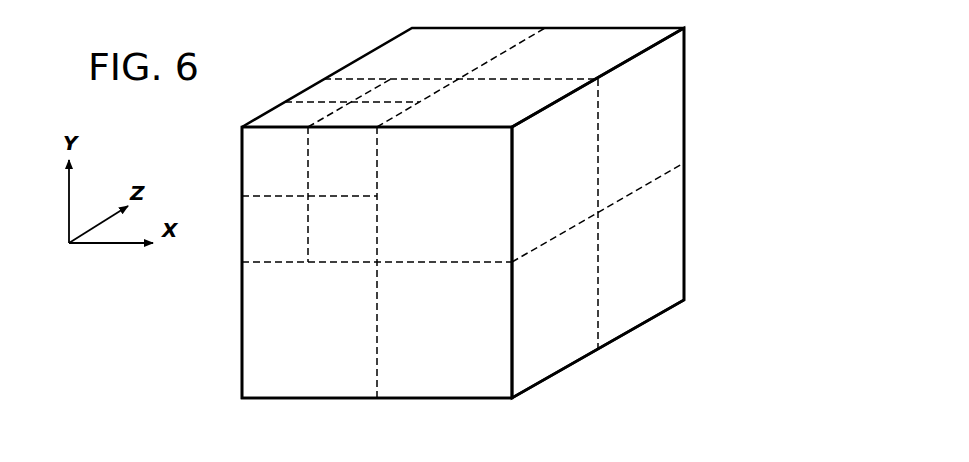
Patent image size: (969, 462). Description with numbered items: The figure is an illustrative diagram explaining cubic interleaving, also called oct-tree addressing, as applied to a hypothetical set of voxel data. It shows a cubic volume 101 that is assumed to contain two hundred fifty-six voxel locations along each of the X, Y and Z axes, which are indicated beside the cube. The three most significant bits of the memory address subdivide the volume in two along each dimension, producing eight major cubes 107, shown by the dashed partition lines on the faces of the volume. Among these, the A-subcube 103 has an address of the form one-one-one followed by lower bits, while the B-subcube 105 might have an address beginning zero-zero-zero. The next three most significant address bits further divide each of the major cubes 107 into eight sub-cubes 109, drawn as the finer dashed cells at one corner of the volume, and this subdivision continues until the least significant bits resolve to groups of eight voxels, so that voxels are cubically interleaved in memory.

The cubic volume 101 is at (738, 82).
The A-subcube 103 is at (659, 127).
The B-subcube 105 is at (310, 363).
The major cubes 107 is at (413, 48).
The sub-cubes 109 is at (392, 96).